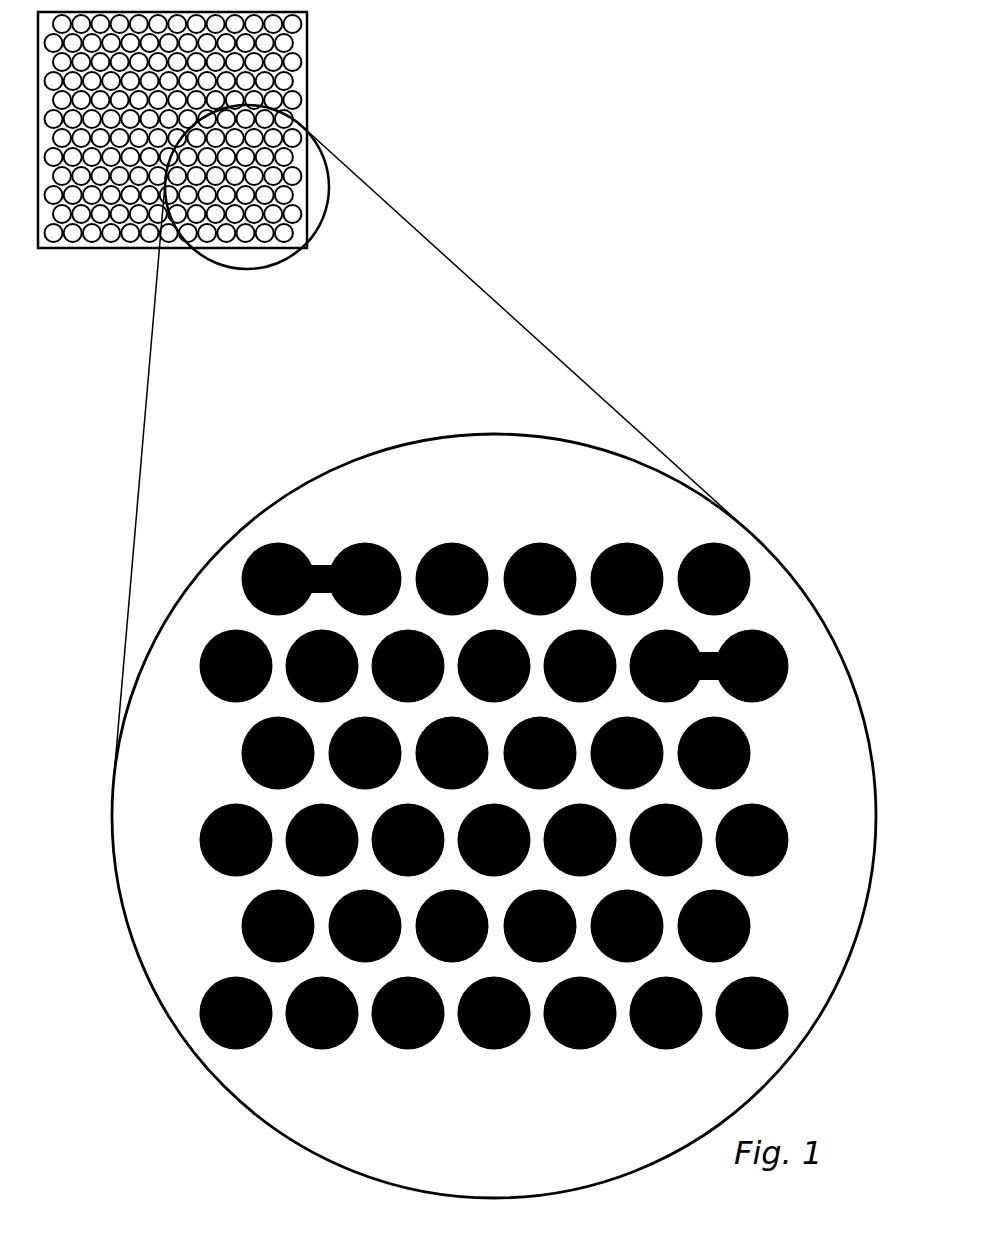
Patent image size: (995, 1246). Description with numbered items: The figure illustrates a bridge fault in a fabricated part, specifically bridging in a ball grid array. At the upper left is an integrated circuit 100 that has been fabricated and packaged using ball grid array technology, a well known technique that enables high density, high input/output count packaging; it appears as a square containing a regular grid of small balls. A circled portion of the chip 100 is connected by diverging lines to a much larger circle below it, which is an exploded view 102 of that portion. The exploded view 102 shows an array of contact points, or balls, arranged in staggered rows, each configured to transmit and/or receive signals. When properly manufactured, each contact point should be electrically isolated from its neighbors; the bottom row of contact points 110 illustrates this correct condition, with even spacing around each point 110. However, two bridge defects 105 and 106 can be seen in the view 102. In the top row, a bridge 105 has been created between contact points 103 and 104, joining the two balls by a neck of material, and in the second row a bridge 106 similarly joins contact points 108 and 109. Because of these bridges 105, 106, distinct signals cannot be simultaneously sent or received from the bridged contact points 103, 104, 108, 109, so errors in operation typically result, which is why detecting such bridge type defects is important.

The integrated circuit 100 is at (308, 52).
The exploded view 102 is at (810, 598).
The contact point 103 is at (278, 579).
The contact point 104 is at (365, 579).
The bridge 105 is at (320, 568).
The bridge 106 is at (712, 682).
The contact point 108 is at (666, 666).
The contact point 109 is at (752, 666).
The contact points 110 is at (494, 1013).